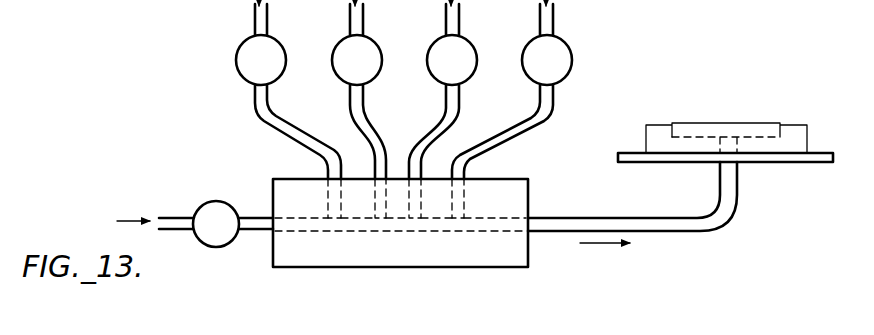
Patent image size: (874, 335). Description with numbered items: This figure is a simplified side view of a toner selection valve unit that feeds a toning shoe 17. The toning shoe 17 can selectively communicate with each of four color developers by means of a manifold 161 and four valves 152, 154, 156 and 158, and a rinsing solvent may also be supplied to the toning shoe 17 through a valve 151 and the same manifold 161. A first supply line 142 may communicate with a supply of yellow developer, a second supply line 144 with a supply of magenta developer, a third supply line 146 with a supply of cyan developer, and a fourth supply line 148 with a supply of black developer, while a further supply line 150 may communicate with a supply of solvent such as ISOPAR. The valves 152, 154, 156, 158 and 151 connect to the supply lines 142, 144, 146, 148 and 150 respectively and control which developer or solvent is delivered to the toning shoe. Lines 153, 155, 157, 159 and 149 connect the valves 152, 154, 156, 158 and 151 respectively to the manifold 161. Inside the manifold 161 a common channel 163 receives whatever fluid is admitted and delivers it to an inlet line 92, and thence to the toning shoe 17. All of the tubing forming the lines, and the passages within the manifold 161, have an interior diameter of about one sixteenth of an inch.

The toning shoe 17 is at (800, 120).
The inlet line 92 is at (738, 193).
The first supply line 142 is at (555, 20).
The second supply line 144 is at (460, 20).
The third supply line 146 is at (350, 20).
The fourth supply line 148 is at (254, 20).
The line 149 is at (258, 231).
The supply line 150 is at (181, 212).
The valve 151 is at (216, 201).
The valve 152 is at (566, 50).
The line 153 is at (556, 103).
The valve 154 is at (471, 50).
The line 155 is at (464, 108).
The valve 156 is at (338, 50).
The line 157 is at (368, 110).
The valve 158 is at (241, 50).
The line 159 is at (272, 108).
The manifold 161 is at (528, 258).
The common channel 163 is at (372, 232).